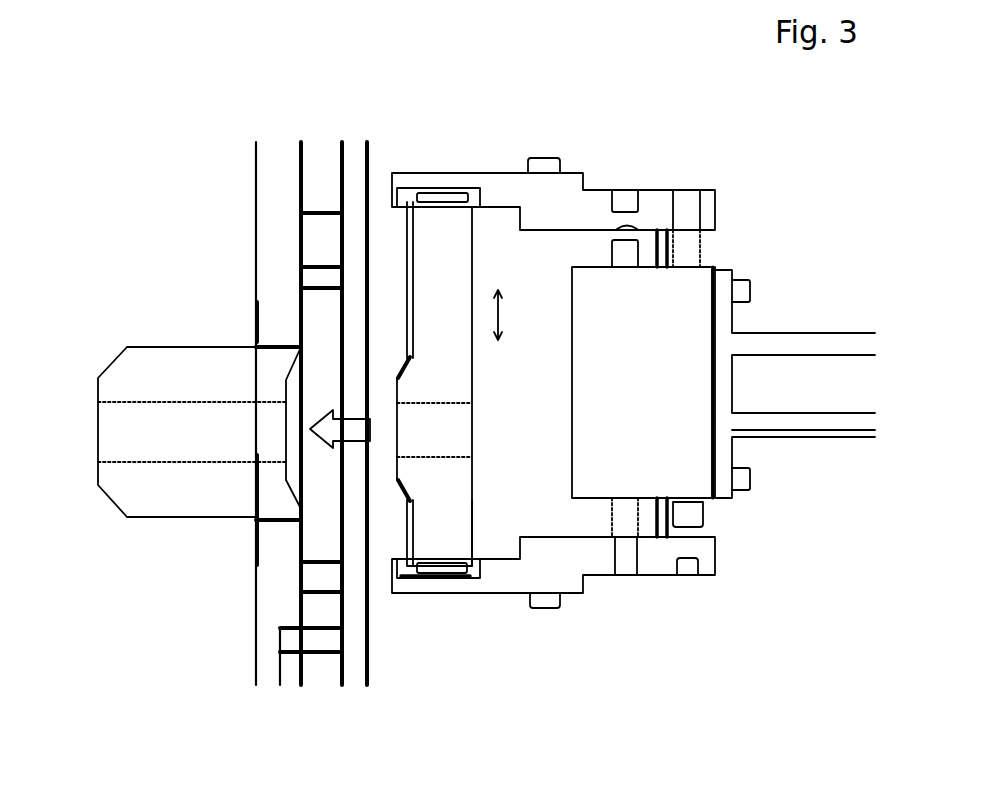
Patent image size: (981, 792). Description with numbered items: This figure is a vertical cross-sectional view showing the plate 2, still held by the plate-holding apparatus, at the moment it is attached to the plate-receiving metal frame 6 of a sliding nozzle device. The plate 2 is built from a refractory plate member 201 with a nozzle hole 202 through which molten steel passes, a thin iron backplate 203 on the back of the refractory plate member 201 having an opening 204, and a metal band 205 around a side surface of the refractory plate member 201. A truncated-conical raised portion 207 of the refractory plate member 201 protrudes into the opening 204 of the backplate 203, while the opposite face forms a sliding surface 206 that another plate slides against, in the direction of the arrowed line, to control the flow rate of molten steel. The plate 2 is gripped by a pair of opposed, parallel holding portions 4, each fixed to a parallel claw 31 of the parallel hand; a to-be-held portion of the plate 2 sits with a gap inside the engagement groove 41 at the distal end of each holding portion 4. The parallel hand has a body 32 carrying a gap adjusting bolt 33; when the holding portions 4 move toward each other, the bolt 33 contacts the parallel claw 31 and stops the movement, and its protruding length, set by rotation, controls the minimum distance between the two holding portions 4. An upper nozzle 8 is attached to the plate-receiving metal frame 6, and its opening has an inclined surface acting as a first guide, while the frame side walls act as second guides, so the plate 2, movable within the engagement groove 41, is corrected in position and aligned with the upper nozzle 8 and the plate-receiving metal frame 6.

The plate 2 is at (450, 402).
The holding portion 4 is at (505, 187).
The plate-receiving metal frame 6 is at (273, 604).
The upper nozzle 8 is at (113, 372).
The parallel claw 31 is at (657, 200).
The body 32 is at (683, 327).
The gap adjusting bolt 33 is at (660, 247).
The engagement groove 41 is at (470, 195).
The refractory plate member 201 is at (430, 233).
The nozzle hole 202 is at (457, 438).
The backplate 203 is at (400, 576).
The opening 204 is at (410, 355).
The metal band 205 is at (455, 580).
The sliding surface 206 is at (472, 517).
The raised portion 207 is at (398, 480).